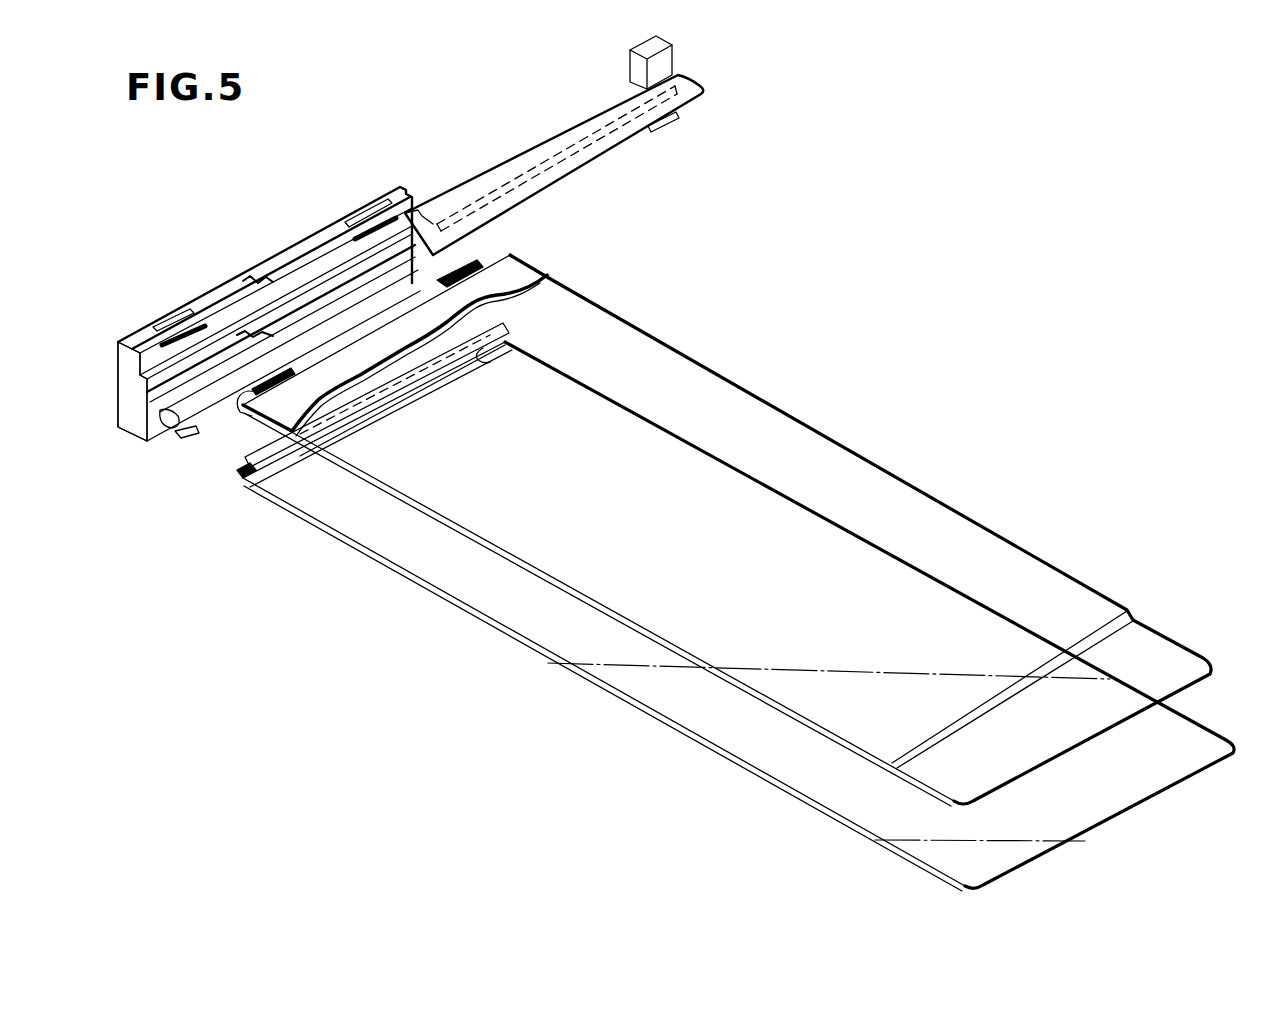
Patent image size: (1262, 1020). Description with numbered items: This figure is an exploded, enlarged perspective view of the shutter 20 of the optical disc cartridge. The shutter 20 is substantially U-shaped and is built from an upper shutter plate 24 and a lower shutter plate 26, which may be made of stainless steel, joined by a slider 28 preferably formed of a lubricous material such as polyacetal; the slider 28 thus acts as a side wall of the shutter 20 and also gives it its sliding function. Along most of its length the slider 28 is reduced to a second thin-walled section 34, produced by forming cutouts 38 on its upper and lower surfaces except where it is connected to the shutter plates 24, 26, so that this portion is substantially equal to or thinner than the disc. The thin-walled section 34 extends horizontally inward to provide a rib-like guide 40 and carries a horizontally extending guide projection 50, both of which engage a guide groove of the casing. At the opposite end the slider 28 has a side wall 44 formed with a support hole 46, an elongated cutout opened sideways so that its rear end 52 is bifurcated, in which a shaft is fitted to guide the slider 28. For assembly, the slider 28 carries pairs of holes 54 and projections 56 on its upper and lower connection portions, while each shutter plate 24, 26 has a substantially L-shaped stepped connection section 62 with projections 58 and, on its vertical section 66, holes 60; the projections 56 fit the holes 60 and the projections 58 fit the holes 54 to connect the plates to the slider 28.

The shutter 20 is at (278, 207).
The upper shutter plate 24 is at (525, 270).
The lower shutter plate 26 is at (665, 714).
The slider 28 is at (325, 230).
The second thin-walled section 34 is at (517, 160).
The cutouts 38 is at (573, 110).
The rib-like guide 40 is at (700, 88).
The side wall 44 is at (128, 410).
The support hole 46 is at (165, 415).
The guide projection 50 is at (600, 148).
The rear end 52 is at (196, 433).
The holes 54 is at (165, 326).
The projections 56 is at (205, 320).
The projections 58 is at (245, 418).
The holes 60 is at (465, 358).
The stepped connection section 62 is at (480, 262).
The vertical section 66 is at (360, 423).